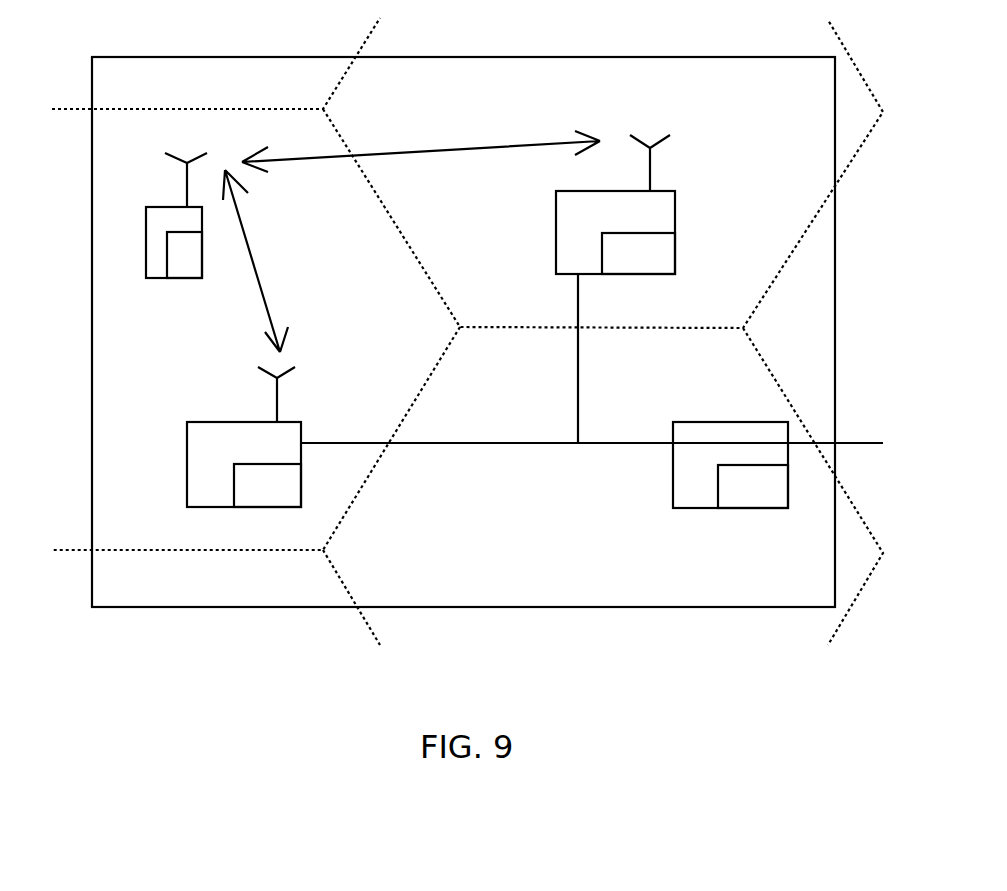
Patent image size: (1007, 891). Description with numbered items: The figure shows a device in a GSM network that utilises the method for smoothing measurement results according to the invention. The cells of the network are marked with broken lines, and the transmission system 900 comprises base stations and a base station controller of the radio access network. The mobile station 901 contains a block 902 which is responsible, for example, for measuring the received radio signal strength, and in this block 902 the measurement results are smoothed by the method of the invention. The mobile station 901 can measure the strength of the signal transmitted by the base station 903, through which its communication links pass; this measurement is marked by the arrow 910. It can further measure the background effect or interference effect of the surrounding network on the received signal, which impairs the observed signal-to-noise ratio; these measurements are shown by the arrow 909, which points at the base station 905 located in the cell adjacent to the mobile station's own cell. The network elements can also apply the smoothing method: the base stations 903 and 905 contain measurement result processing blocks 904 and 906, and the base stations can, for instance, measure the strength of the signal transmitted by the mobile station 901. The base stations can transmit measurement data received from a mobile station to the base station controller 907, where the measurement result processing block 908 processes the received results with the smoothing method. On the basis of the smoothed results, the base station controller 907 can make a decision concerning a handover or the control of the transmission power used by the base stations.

The transmission system 900 is at (463, 315).
The mobile station 901 is at (176, 215).
The block 902 is at (181, 244).
The base station 903 is at (244, 437).
The measurement result processing block 904 is at (267, 473).
The base station 905 is at (615, 204).
The measurement result processing block 906 is at (638, 240).
The base station controller 907 is at (730, 452).
The measurement result processing block 908 is at (753, 474).
The arrow 909 is at (421, 151).
The arrow 910 is at (258, 261).